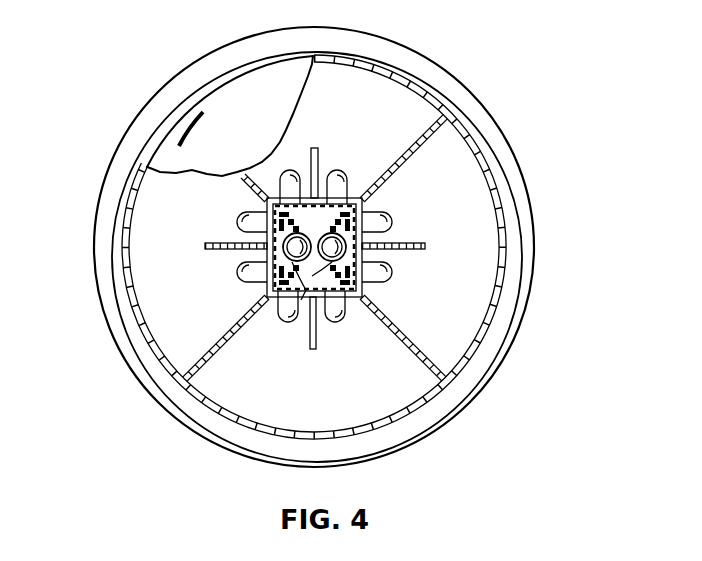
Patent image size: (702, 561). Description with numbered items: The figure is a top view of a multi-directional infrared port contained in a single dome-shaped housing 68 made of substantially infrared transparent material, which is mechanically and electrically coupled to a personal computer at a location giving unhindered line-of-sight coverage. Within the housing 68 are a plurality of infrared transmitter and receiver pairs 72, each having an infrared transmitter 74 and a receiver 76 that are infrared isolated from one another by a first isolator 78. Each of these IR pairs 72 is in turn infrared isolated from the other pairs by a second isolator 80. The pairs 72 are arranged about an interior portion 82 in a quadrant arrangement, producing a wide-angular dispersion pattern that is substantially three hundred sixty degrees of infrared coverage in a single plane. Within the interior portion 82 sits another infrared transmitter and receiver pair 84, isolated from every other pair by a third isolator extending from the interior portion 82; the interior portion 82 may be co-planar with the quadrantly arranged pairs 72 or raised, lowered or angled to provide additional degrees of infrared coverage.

The housing 68 is at (215, 98).
The infrared transmitter and receiver pairs 72 is at (498, 266).
The infrared transmitter 74 is at (293, 172).
The receiver 76 is at (338, 172).
The first isolator 78 is at (322, 152).
The second isolator 80 is at (405, 157).
The interior portion 82 is at (262, 291).
The infrared transmitter and receiver pair 84 is at (312, 300).